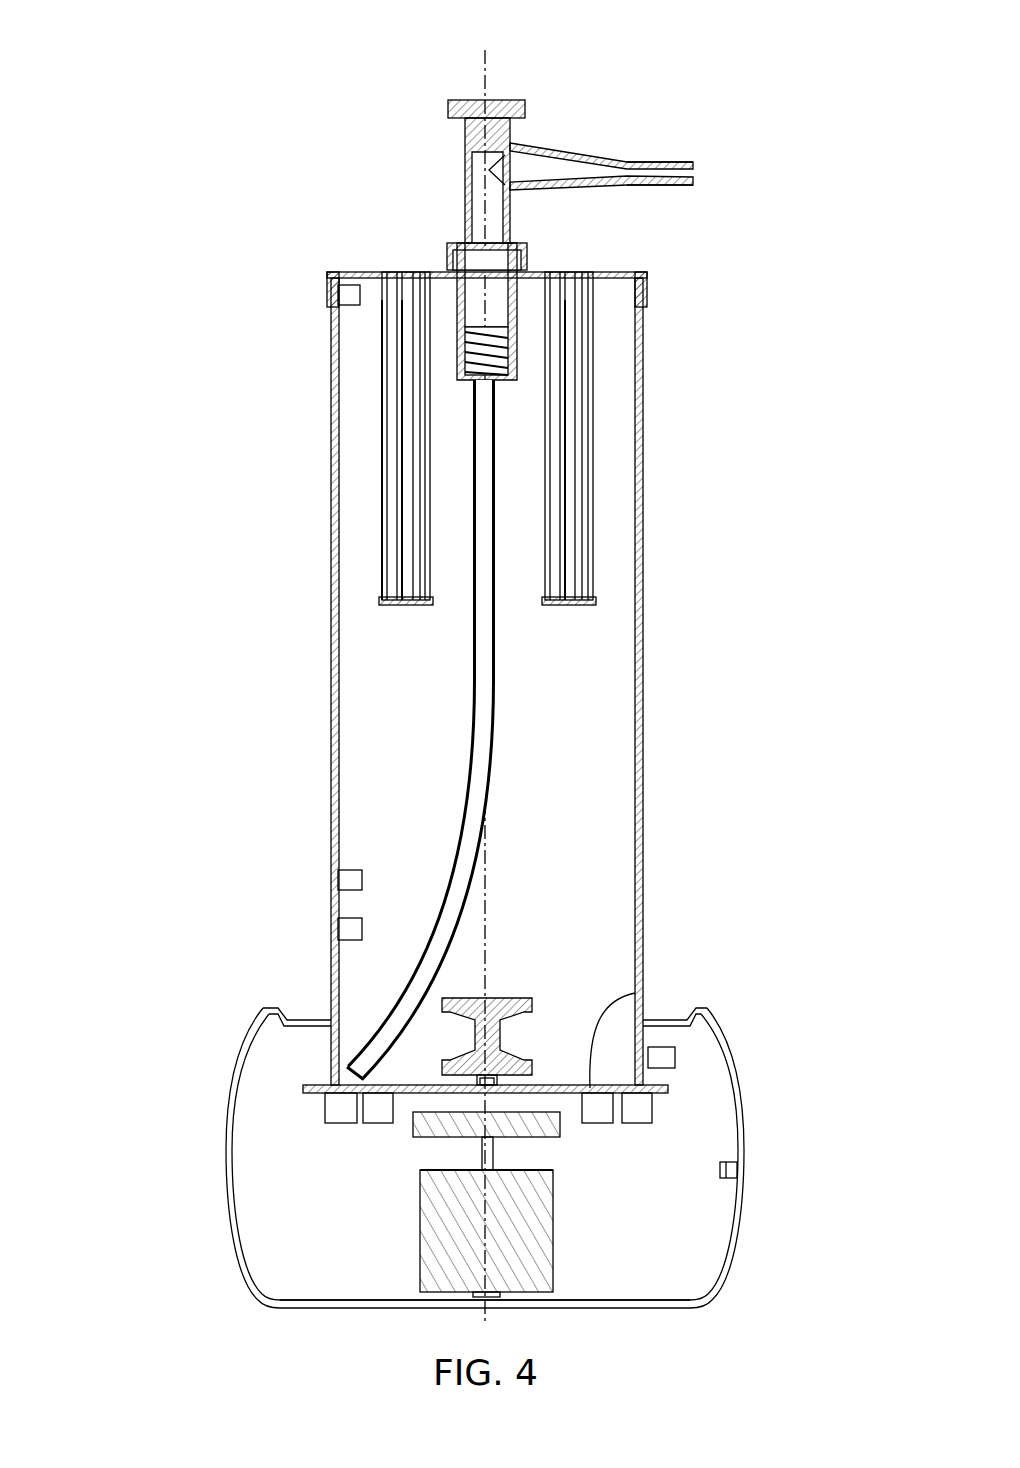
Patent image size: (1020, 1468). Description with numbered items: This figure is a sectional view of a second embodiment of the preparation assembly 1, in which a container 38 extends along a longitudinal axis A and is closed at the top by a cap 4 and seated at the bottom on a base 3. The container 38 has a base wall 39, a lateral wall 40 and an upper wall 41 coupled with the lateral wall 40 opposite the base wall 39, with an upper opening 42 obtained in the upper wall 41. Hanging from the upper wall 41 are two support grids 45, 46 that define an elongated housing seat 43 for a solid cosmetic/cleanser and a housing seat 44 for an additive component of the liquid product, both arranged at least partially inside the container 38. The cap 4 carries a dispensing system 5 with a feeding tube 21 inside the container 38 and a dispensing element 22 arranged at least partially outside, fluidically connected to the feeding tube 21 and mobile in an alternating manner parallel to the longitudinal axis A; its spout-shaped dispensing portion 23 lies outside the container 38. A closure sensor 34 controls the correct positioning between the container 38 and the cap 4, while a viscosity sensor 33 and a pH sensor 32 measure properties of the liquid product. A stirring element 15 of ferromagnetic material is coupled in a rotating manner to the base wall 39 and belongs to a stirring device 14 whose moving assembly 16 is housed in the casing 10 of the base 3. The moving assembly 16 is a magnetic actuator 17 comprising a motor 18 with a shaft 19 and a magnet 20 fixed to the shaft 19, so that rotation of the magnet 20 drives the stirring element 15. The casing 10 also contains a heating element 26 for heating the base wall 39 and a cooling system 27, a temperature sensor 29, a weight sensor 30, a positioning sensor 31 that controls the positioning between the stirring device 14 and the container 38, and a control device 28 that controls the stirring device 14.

The preparation assembly 1 is at (212, 210).
The longitudinal axis A is at (485, 65).
The dispensing element 22 is at (430, 80).
The cap 4 is at (635, 123).
The dispensing portion 23 is at (627, 167).
The dispensing system 5 is at (643, 230).
The container 38 is at (305, 663).
The lateral wall 40 is at (333, 728).
The upper wall 41 is at (367, 273).
The housing seat 43 is at (370, 430).
The support grid 45 is at (400, 468).
The housing seat 44 is at (598, 442).
The support grid 46 is at (570, 518).
The upper opening 42 is at (478, 265).
The closure sensor 34 is at (345, 295).
The viscosity sensor 33 is at (345, 878).
The pH sensor 32 is at (345, 928).
The feeding tube 21 is at (497, 710).
The stirring element 15 is at (475, 1055).
The base wall 39 is at (633, 993).
The base 3 is at (157, 1082).
The casing 10 is at (230, 1187).
The stirring device 14 is at (308, 1178).
The positioning sensor 31 is at (665, 1057).
The temperature sensor 29 is at (342, 1110).
The cooling system 27 is at (380, 1113).
The heating element 26 is at (598, 1117).
The weight sensor 30 is at (643, 1108).
The control device 28 is at (732, 1170).
The magnet 20 is at (423, 1128).
The moving assembly 16 is at (597, 1242).
The shaft 19 is at (480, 1158).
The motor 18 is at (515, 1258).
The magnetic actuator 17 is at (408, 1252).